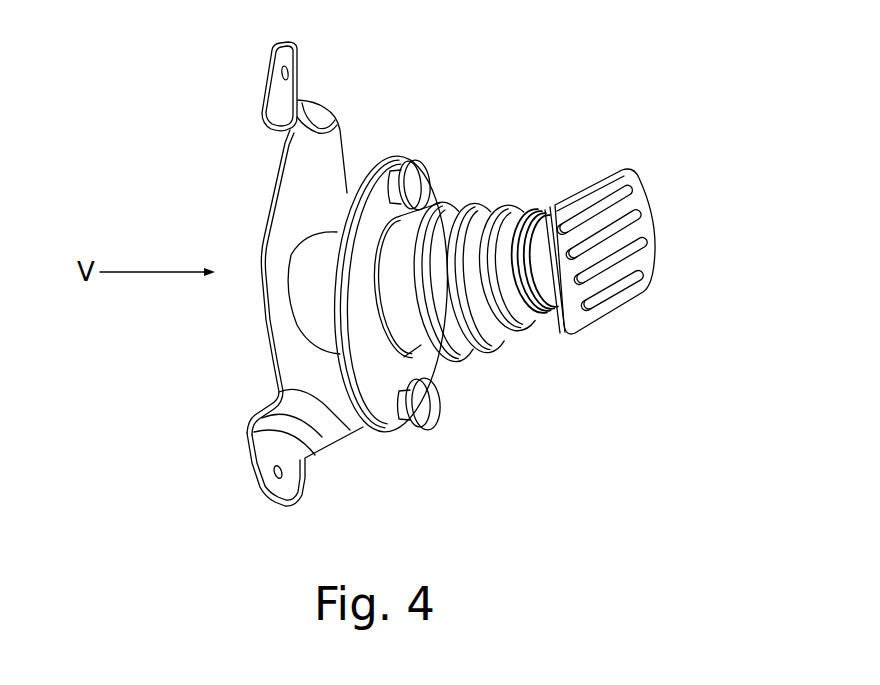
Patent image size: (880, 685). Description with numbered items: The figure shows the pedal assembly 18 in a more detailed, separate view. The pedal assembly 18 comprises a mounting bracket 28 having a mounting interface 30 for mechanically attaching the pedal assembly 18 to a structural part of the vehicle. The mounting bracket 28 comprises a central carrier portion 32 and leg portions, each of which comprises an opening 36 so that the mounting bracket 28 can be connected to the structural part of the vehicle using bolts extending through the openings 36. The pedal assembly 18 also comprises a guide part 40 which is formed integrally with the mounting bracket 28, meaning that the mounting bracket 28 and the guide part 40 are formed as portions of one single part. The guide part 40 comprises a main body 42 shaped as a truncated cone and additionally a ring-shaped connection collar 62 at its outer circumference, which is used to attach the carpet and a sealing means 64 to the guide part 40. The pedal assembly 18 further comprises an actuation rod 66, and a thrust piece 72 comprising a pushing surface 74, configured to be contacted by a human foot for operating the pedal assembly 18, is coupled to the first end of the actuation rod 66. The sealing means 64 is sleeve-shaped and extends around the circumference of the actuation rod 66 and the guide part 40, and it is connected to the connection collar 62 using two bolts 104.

The pedal assembly 18 is at (537, 277).
The mounting bracket 28 is at (268, 318).
The mounting interface 30 is at (236, 440).
The central carrier portion 32 is at (270, 250).
The opening 36 is at (289, 71).
The guide part 40 is at (407, 148).
The main body 42 is at (323, 230).
The connection collar 62 is at (363, 430).
The sealing means 64 is at (508, 336).
The actuation rod 66 is at (546, 245).
The thrust piece 72 is at (630, 178).
The pushing surface 74 is at (640, 240).
The bolts 104 is at (420, 182).